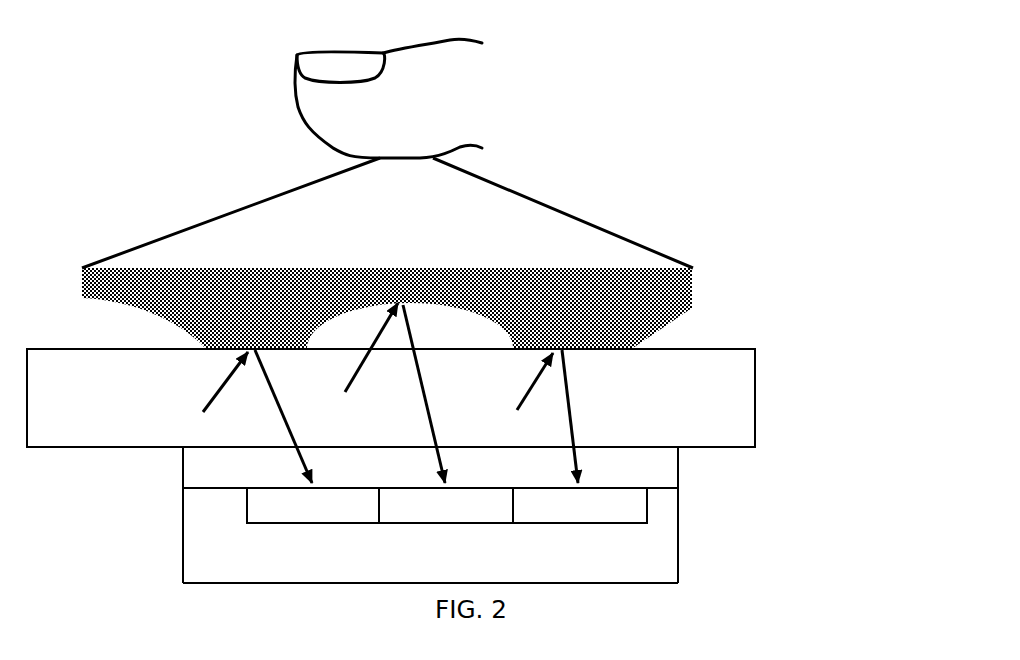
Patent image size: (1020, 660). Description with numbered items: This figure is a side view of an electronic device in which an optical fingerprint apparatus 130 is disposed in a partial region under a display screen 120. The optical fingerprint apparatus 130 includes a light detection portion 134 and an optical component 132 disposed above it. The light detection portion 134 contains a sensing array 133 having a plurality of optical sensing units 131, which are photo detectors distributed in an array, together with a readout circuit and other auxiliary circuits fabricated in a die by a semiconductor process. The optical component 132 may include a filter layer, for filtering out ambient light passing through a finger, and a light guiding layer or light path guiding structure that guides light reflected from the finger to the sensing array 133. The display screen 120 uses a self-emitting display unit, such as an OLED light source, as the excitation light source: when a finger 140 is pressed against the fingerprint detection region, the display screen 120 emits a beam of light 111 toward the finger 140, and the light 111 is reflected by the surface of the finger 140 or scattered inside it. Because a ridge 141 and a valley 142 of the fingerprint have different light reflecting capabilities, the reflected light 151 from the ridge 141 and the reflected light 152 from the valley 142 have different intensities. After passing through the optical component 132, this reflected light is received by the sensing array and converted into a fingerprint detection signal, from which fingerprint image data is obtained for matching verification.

The finger 140 is at (420, 98).
The valley 142 is at (387, 293).
The ridge 141 is at (408, 322).
The display screen 120 is at (747, 402).
The light 111 is at (355, 366).
The reflected light from the ridge 151 is at (437, 416).
The reflected light from the valley 152 is at (435, 394).
The optical fingerprint apparatus 130 is at (826, 455).
The optical component 132 is at (678, 467).
The sensing array 133 is at (247, 498).
The light detection portion 134 is at (678, 533).
The optical sensing unit 131 is at (447, 505).